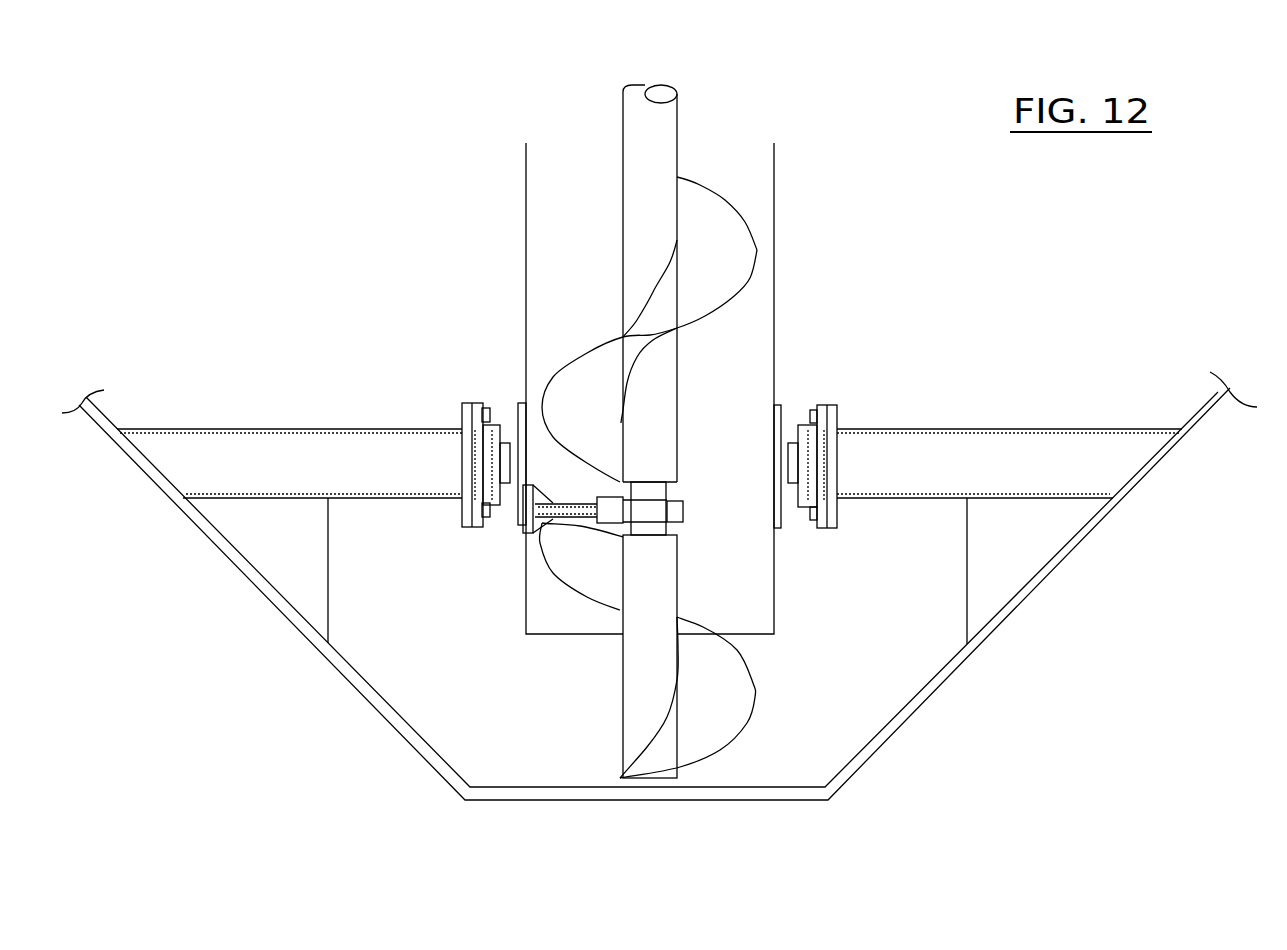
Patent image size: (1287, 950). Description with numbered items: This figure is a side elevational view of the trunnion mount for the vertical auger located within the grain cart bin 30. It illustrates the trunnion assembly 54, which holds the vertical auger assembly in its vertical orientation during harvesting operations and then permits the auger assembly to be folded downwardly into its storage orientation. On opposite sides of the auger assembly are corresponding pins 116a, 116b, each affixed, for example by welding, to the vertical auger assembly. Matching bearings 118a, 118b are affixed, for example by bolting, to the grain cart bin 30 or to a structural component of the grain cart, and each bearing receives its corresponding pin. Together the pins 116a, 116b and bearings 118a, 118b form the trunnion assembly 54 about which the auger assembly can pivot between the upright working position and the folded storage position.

The grain cart bin 30 is at (1002, 624).
The trunnion assembly 54 is at (873, 256).
The pin 116a is at (787, 418).
The pin 116b is at (508, 418).
The bearing 118a is at (836, 404).
The bearing 118b is at (467, 403).